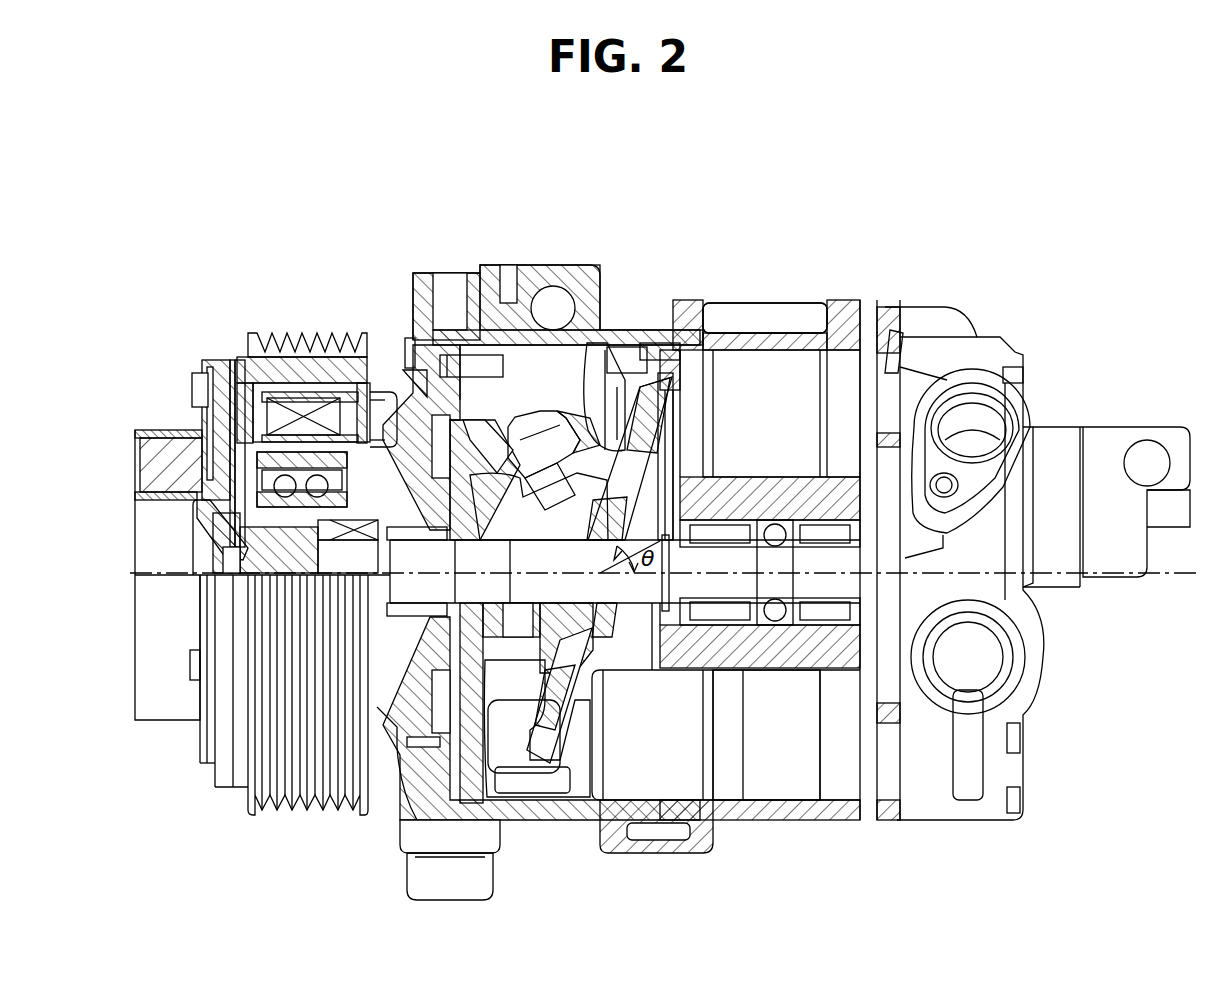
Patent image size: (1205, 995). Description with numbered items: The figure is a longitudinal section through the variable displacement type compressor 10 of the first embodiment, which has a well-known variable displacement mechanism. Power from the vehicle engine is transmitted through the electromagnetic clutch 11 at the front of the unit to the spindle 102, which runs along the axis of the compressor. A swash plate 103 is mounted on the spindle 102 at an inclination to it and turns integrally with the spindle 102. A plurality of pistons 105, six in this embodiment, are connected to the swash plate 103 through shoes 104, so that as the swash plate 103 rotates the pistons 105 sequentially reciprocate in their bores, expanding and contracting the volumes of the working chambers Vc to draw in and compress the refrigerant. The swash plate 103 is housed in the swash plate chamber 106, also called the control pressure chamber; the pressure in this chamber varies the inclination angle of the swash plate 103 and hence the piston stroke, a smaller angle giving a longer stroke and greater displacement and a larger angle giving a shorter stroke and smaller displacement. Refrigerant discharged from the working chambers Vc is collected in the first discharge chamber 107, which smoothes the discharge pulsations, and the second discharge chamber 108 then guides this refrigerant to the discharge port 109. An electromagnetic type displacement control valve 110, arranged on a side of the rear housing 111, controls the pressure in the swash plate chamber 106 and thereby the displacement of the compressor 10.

The variable displacement type compressor 10 is at (697, 278).
The electromagnetic clutch 11 is at (247, 790).
The spindle 102 is at (395, 787).
The swash plate 103 is at (600, 415).
The shoes 104 is at (618, 540).
The pistons 105 is at (763, 383).
The swash plate chamber 106 is at (620, 640).
The first discharge chamber 107 is at (899, 367).
The second discharge chamber 108 is at (813, 320).
The discharge port 109 is at (778, 300).
The electromagnetic type displacement control valve 110 is at (970, 657).
The rear housing 111 is at (930, 753).
The working chambers Vc is at (810, 767).